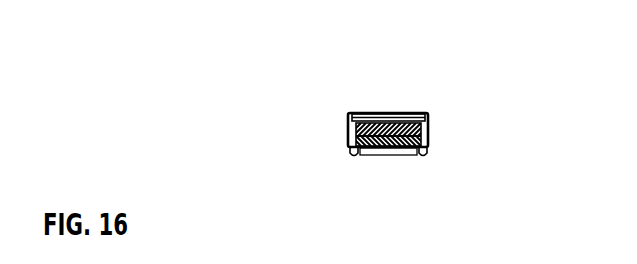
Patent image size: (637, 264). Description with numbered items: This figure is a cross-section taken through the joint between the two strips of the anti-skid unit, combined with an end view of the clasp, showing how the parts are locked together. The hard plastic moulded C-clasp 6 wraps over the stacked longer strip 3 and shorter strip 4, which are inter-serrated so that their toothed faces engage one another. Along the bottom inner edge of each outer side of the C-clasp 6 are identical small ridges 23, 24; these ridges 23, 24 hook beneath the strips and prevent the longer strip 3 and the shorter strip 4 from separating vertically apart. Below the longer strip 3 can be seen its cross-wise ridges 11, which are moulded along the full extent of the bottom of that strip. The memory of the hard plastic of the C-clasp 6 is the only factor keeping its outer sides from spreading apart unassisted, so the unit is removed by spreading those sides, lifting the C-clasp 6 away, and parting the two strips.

The longer strip 3 is at (348, 115).
The C-clasp 6 is at (372, 115).
The shorter strip 4 is at (427, 113).
The small ridge 23 is at (355, 150).
The small ridge 24 is at (423, 153).
The ridges 11 is at (372, 152).